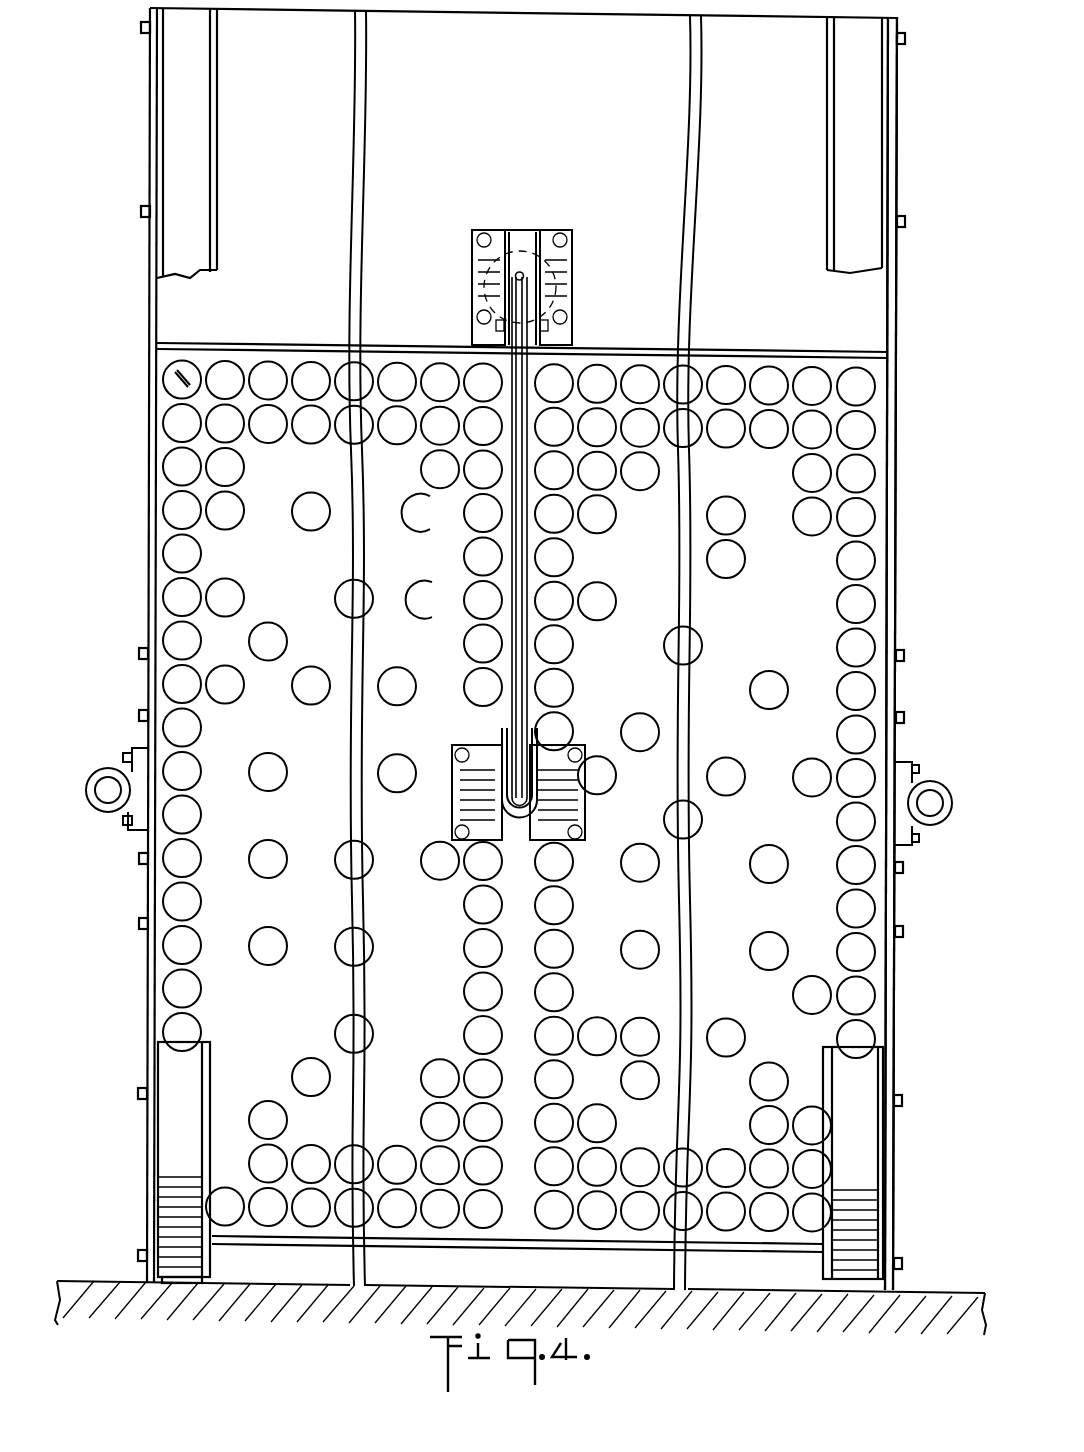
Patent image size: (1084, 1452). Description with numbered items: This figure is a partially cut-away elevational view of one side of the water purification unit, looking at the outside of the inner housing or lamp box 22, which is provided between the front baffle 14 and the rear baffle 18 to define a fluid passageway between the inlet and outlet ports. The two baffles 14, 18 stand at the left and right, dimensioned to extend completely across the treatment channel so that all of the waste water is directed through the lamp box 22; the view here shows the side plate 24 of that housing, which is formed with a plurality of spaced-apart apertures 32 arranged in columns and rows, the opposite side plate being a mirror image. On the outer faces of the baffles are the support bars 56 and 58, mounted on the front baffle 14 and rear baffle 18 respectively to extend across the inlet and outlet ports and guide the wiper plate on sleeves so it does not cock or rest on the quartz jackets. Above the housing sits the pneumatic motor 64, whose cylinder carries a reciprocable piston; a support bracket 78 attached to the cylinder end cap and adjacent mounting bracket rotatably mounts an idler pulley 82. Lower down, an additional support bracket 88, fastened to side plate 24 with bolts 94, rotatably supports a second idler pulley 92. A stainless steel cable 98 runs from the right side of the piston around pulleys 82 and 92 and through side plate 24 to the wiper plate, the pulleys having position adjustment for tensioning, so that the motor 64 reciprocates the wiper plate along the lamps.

The front baffle 14 is at (152, 131).
The rear baffle 18 is at (893, 163).
The inner housing or lamp box 22 is at (284, 300).
The side plate 24 is at (873, 538).
The aperture 32 is at (162, 379).
The support bar 56 is at (106, 768).
The support bar 58 is at (940, 785).
The pneumatic motor 64 is at (540, 236).
The support bracket 78 is at (568, 254).
The idler pulley 82 is at (500, 328).
The support bracket 88 is at (586, 797).
The idler pulley 92 is at (530, 715).
The bolt 94 is at (582, 832).
The cable 98 is at (524, 666).